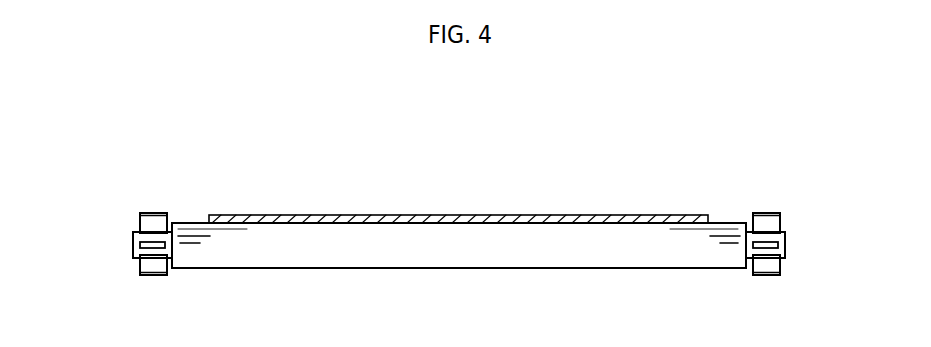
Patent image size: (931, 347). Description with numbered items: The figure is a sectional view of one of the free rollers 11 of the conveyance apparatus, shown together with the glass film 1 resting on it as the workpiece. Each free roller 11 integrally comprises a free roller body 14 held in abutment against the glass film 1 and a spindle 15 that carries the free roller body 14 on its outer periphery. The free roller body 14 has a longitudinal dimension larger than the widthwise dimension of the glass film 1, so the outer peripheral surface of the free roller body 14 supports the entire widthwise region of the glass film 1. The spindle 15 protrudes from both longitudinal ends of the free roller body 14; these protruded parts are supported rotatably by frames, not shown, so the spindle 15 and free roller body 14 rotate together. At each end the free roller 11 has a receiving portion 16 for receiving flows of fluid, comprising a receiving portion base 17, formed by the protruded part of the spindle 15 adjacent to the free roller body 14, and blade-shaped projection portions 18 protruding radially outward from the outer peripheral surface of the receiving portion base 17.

The glass film 1 is at (409, 222).
The free roller 11 is at (380, 277).
The free roller body 14 is at (490, 255).
The spindle 15 is at (133, 237).
The receiving portion base 17 is at (459, 245).
The receiving portion 16 is at (148, 212).
The projection portion 18 is at (140, 245).